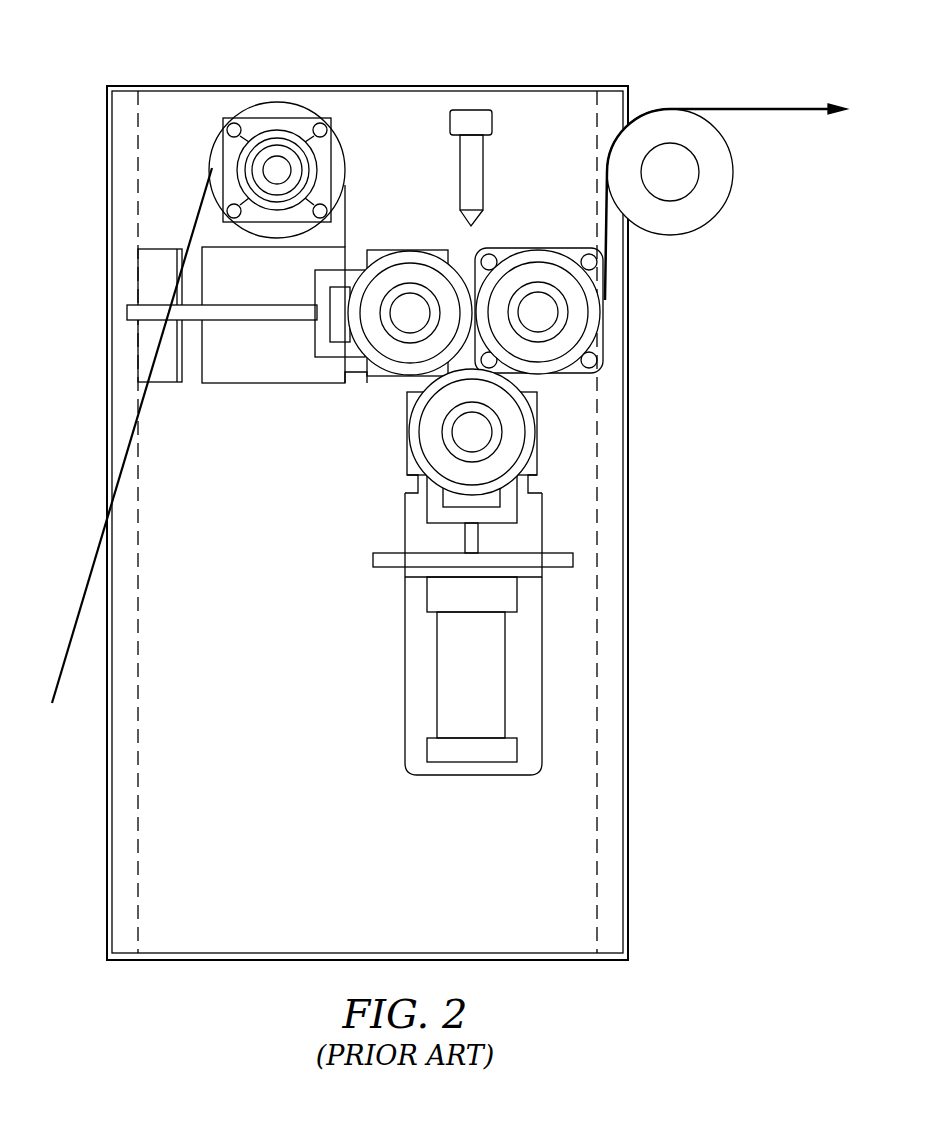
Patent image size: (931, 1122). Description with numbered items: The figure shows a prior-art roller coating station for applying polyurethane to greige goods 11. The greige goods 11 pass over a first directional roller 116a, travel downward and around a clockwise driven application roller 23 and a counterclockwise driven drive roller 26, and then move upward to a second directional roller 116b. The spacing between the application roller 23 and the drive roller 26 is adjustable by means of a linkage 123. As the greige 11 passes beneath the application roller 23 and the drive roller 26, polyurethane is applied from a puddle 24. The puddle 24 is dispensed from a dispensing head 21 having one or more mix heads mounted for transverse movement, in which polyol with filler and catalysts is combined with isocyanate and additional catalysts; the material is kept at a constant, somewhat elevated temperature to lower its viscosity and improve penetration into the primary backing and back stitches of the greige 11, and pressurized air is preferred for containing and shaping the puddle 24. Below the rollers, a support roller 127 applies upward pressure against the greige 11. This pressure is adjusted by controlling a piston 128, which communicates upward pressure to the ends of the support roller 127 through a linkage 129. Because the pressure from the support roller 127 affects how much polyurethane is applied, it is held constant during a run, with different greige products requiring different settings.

The greige goods 11 is at (752, 105).
The dispensing head 21 is at (463, 108).
The application roller 23 is at (376, 383).
The puddle 24 is at (470, 270).
The drive roller 26 is at (512, 255).
The first directional roller 116a is at (268, 103).
The second directional roller 116b is at (695, 208).
The linkage 123 is at (292, 323).
The support roller 127 is at (537, 470).
The piston 128 is at (467, 597).
The linkage 129 is at (467, 542).